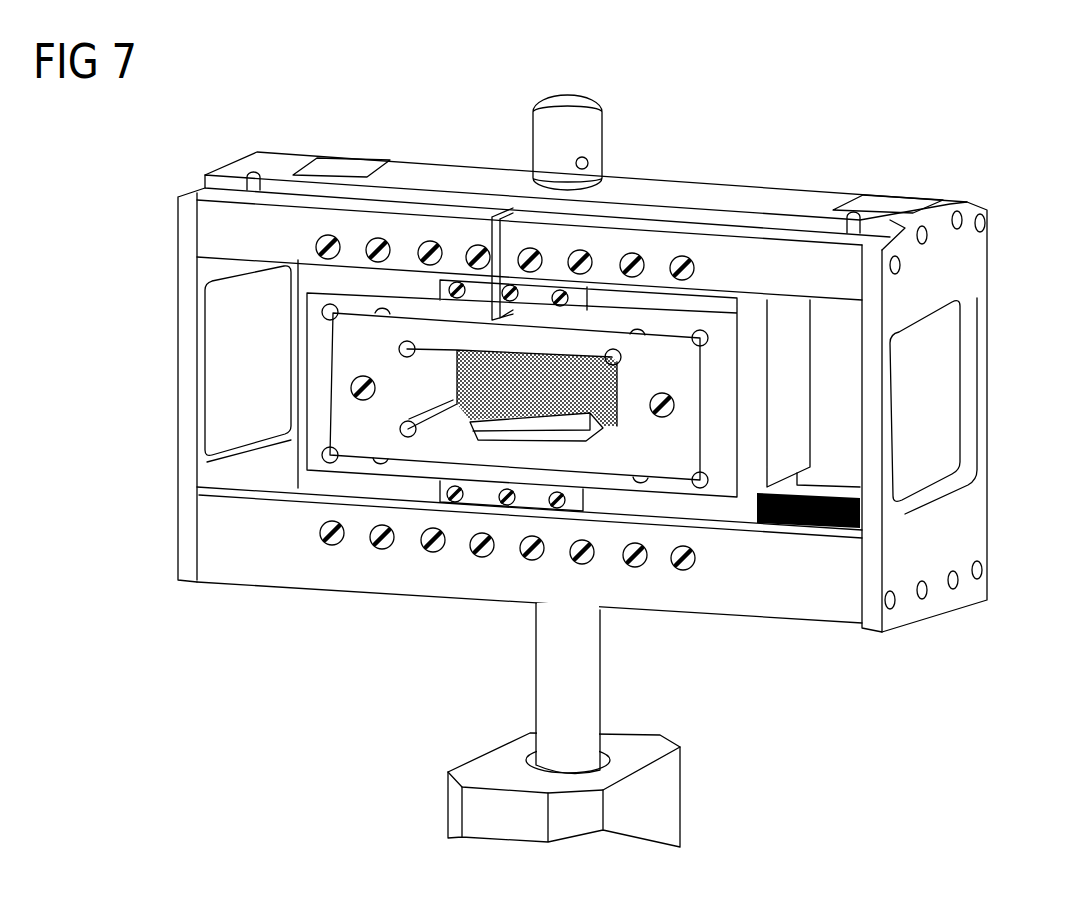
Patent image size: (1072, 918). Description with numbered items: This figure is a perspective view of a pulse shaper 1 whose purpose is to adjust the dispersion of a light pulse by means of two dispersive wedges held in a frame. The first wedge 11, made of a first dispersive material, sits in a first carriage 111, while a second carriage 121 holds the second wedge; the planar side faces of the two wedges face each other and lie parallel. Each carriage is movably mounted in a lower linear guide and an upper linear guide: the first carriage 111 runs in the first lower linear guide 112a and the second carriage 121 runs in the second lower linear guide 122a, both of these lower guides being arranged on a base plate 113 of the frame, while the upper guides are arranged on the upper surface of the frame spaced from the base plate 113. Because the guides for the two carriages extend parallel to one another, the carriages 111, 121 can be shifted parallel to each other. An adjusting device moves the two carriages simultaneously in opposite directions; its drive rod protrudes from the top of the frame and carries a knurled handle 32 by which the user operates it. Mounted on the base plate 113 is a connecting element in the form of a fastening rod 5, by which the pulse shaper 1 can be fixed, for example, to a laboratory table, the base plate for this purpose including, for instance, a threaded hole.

The pulse shaper 1 is at (582, 392).
The fastening rod 5 is at (560, 670).
The first wedge 11 is at (485, 393).
The knurled handle 32 is at (588, 137).
The first carriage 111 is at (663, 443).
The first lower linear guide 112a is at (730, 520).
The base plate 113 is at (830, 630).
The second carriage 121 is at (797, 390).
The second lower linear guide 122a is at (798, 475).